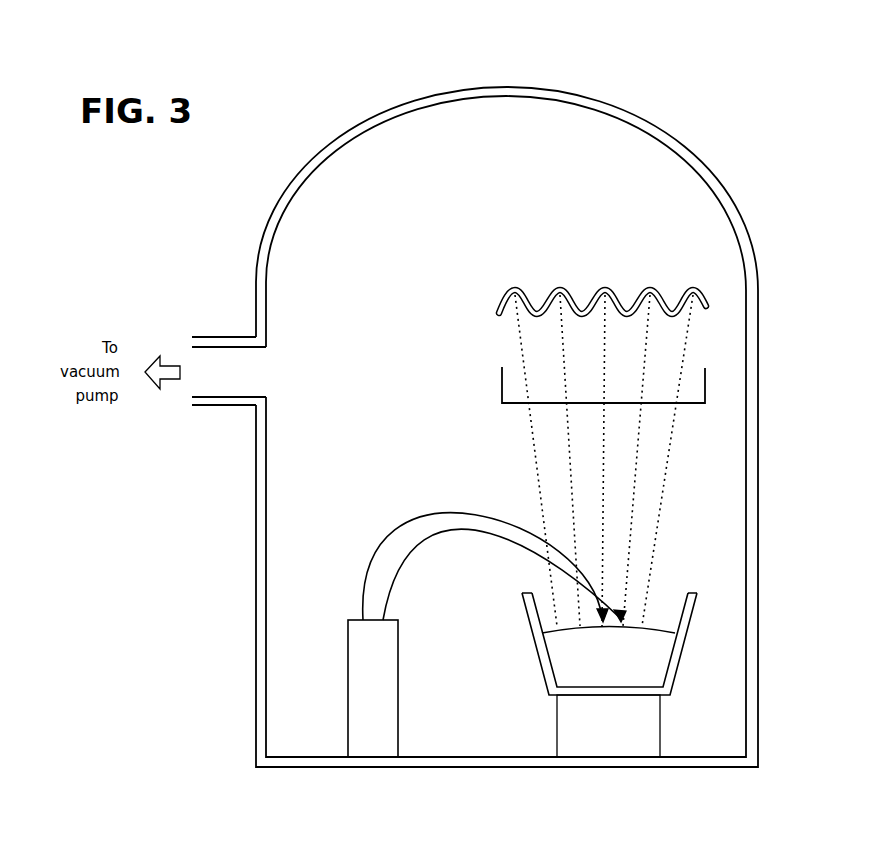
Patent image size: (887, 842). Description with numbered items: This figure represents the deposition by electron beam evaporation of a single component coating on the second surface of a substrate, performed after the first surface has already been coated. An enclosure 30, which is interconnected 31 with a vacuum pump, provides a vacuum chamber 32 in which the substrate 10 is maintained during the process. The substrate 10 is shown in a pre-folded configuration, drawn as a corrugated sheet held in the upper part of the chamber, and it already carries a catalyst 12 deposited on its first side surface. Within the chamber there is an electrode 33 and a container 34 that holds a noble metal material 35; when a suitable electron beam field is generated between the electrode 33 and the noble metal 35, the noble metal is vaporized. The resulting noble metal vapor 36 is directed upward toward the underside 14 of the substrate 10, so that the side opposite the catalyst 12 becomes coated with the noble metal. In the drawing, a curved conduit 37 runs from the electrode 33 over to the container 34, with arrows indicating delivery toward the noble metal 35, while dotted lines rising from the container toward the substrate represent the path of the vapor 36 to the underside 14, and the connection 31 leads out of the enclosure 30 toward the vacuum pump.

The enclosure 30 is at (727, 193).
The interconnection with vacuum pump 31 is at (213, 337).
The vacuum chamber 32 is at (465, 207).
The substrate 10 is at (707, 302).
The catalyst 12 is at (697, 290).
The underside 14 is at (687, 305).
The noble metal vapor 36 is at (502, 386).
The feed tube 37 is at (467, 538).
The electrode 33 is at (372, 688).
The container 34 is at (545, 657).
The noble metal material 35 is at (599, 668).